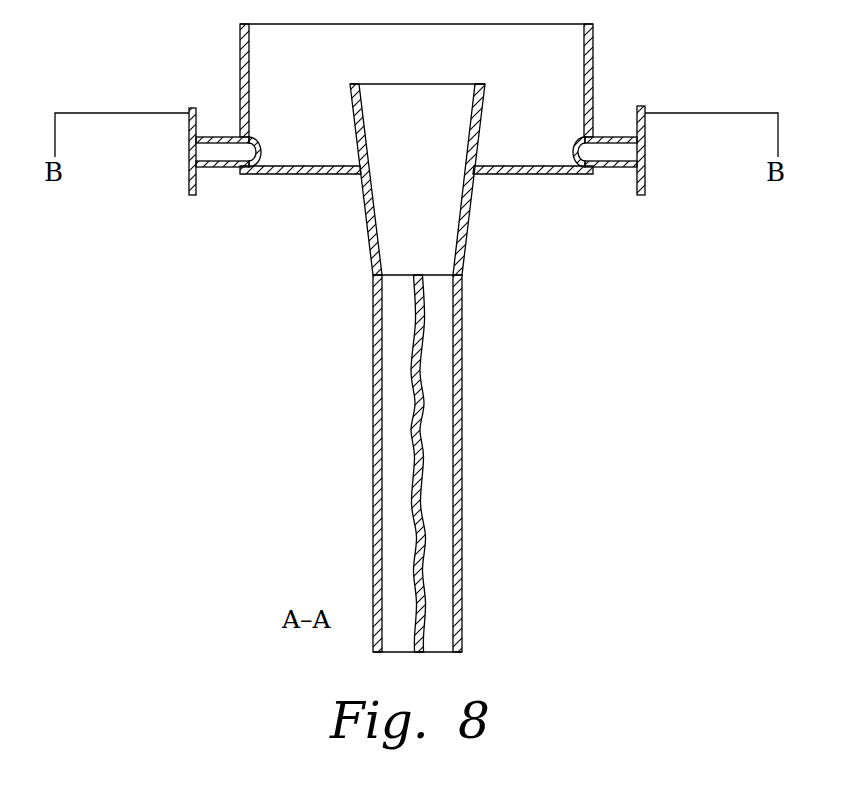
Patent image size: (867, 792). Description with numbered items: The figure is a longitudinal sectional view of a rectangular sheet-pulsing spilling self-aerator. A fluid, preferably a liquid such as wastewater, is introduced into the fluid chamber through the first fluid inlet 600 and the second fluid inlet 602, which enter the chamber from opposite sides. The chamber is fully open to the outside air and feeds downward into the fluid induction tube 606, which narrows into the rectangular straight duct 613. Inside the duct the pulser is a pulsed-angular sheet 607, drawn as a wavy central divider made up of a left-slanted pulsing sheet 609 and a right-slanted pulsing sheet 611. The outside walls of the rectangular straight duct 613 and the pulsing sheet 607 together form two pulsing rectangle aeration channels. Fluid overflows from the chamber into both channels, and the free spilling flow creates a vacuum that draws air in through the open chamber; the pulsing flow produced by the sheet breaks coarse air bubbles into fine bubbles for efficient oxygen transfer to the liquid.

The first fluid inlet 600 is at (191, 151).
The second fluid inlet 602 is at (645, 152).
The fluid induction tube 606 is at (363, 203).
The pulsed-angular sheet 607 is at (395, 320).
The left-slanted pulsing sheet 609 is at (412, 428).
The right-slanted pulsing sheet 611 is at (421, 388).
The rectangular straight duct 613 is at (462, 338).